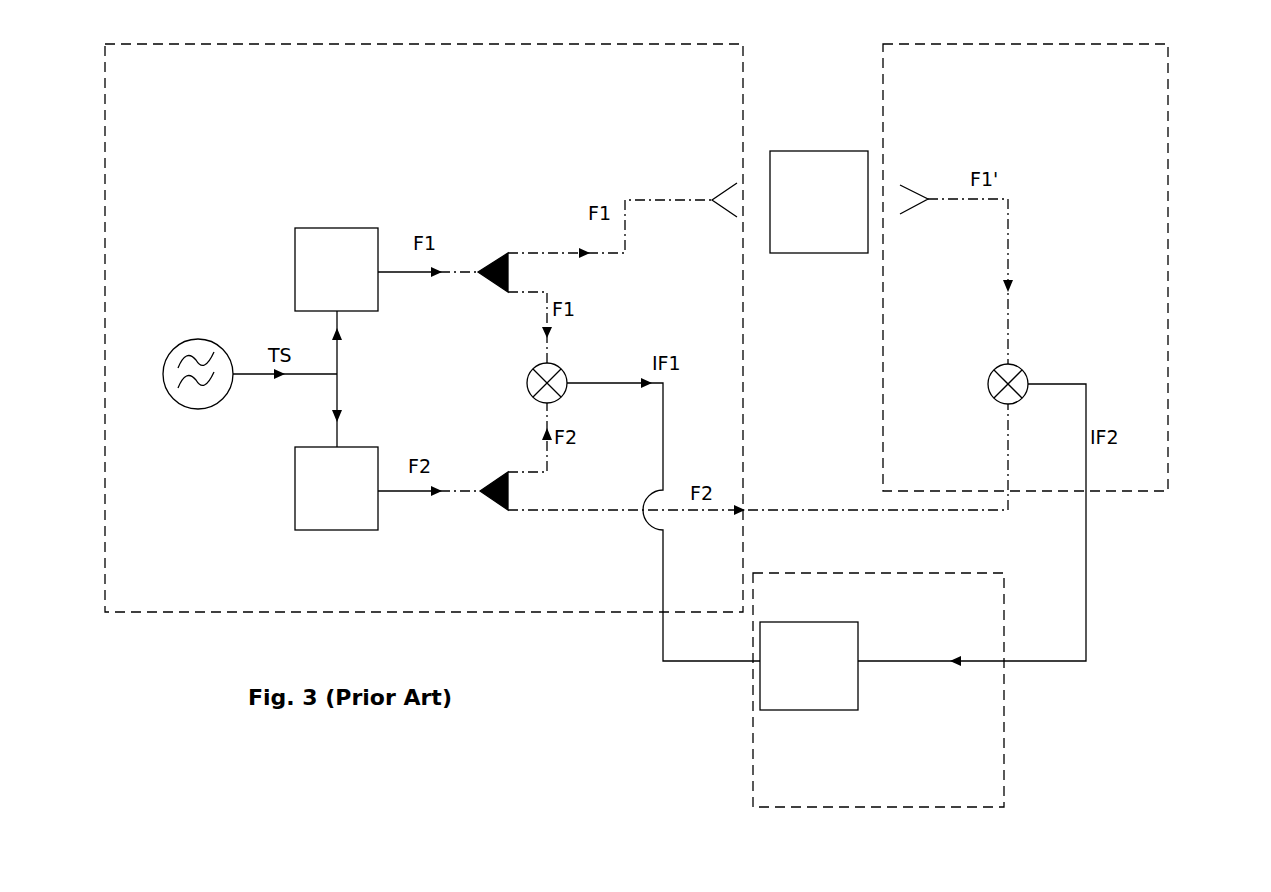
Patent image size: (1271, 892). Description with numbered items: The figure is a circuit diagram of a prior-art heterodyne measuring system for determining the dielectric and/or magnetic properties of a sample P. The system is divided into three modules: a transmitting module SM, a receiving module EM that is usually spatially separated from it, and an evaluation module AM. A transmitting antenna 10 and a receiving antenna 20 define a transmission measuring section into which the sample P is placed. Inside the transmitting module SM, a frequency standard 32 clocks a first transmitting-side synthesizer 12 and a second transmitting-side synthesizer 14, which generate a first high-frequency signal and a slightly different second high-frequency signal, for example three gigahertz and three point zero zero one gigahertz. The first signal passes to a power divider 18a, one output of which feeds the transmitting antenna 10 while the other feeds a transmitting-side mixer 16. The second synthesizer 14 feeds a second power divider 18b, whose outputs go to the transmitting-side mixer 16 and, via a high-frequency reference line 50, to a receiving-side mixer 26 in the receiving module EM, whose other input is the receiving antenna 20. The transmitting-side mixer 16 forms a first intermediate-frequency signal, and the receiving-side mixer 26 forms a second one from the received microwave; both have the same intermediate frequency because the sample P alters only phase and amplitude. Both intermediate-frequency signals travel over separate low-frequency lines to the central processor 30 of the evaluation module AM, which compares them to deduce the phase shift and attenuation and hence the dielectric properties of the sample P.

The transmitting antenna 10 is at (722, 190).
The first transmitting-side synthesizer 12 is at (348, 281).
The second transmitting-side synthesizer 14 is at (348, 500).
The transmitting-side mixer 16 is at (527, 383).
The first power divider 18a is at (493, 253).
The second power divider 18b is at (493, 510).
The receiving antenna 20 is at (914, 190).
The receiving-side mixer 26 is at (1013, 371).
The central processor 30 is at (821, 675).
The frequency standard 32 is at (172, 381).
The high-frequency reference line 50 is at (873, 511).
The transmitting module SM is at (188, 578).
The receiving module EM is at (1140, 133).
The evaluation module AM is at (985, 739).
The sample P is at (826, 201).